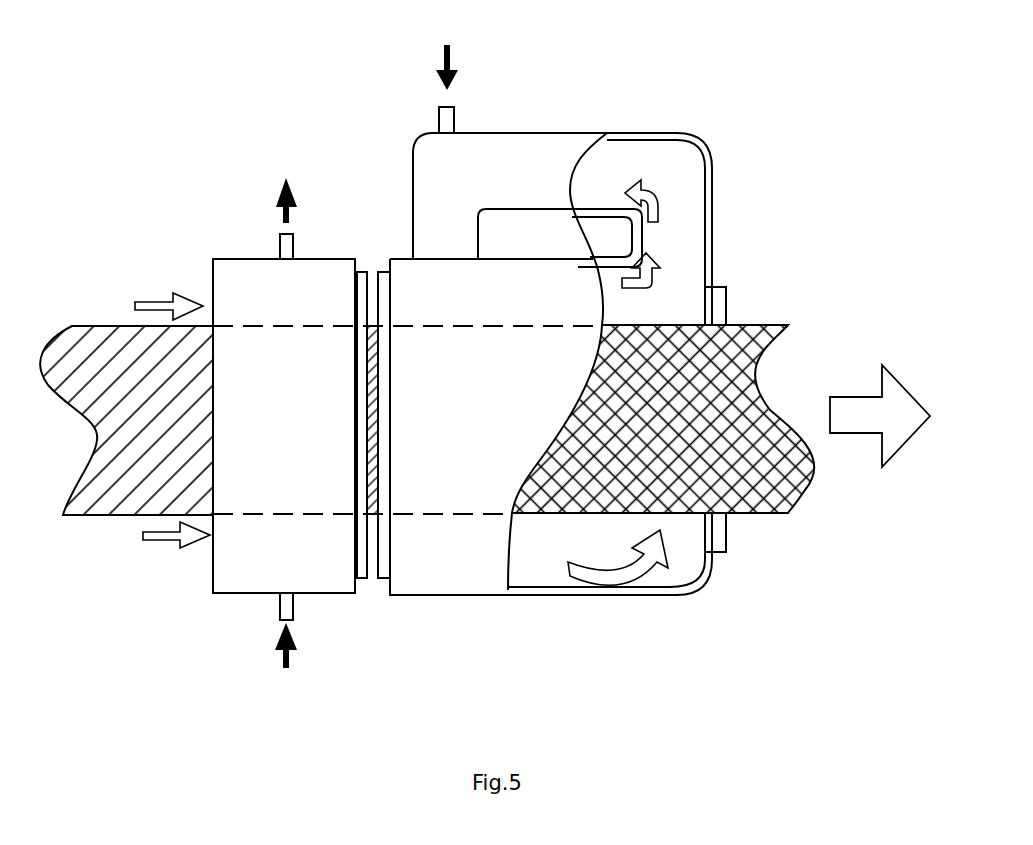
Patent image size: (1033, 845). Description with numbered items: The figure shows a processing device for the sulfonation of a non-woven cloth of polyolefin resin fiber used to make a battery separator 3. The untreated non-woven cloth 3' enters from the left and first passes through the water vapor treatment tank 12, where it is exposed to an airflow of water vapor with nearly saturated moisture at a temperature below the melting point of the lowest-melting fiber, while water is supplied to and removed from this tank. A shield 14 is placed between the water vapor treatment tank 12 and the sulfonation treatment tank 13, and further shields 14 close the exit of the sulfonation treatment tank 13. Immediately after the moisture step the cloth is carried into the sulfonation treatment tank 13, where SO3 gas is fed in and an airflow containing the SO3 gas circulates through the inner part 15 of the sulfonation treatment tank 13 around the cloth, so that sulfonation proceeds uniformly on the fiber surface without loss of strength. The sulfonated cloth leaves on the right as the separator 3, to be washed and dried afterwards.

The untreated fabric / material inlet 3' is at (126, 378).
The water vapor treatment tank 12 is at (258, 270).
The shield 14 is at (363, 260).
The sulfonation treatment tank 13 is at (520, 157).
The inner part of a sulfonation treatment tank 15 is at (662, 167).
The separator 3 is at (721, 367).